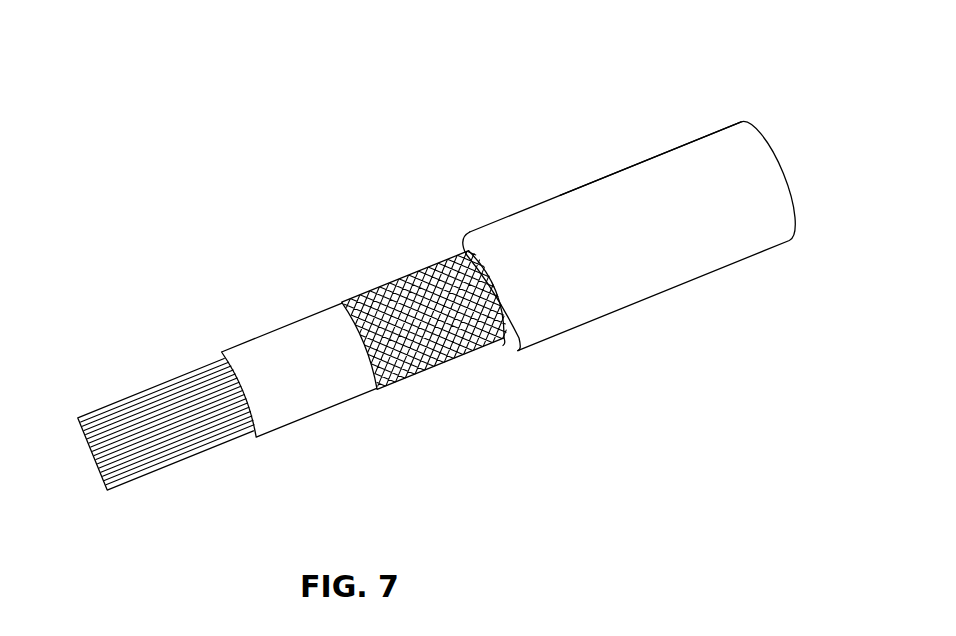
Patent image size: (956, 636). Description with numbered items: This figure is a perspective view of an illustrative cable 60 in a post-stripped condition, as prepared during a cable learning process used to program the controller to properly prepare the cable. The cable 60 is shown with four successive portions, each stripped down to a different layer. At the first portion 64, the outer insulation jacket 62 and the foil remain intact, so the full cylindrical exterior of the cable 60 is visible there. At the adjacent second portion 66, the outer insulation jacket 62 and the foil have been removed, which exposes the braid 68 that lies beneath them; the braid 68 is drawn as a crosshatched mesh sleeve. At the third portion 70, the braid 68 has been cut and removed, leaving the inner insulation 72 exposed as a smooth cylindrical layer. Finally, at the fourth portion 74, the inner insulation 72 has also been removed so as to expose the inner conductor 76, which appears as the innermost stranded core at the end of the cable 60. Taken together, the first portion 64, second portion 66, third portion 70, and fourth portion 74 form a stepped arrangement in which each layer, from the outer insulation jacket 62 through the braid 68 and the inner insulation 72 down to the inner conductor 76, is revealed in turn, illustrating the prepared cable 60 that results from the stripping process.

The cable 60 is at (586, 112).
The outer insulation jacket 62 is at (688, 265).
The first portion 64 is at (641, 162).
The second portion 66 is at (394, 258).
The braid 68 is at (437, 348).
The third portion 70 is at (281, 304).
The inner insulation 72 is at (310, 395).
The fourth portion 74 is at (139, 381).
The inner conductor 76 is at (178, 443).